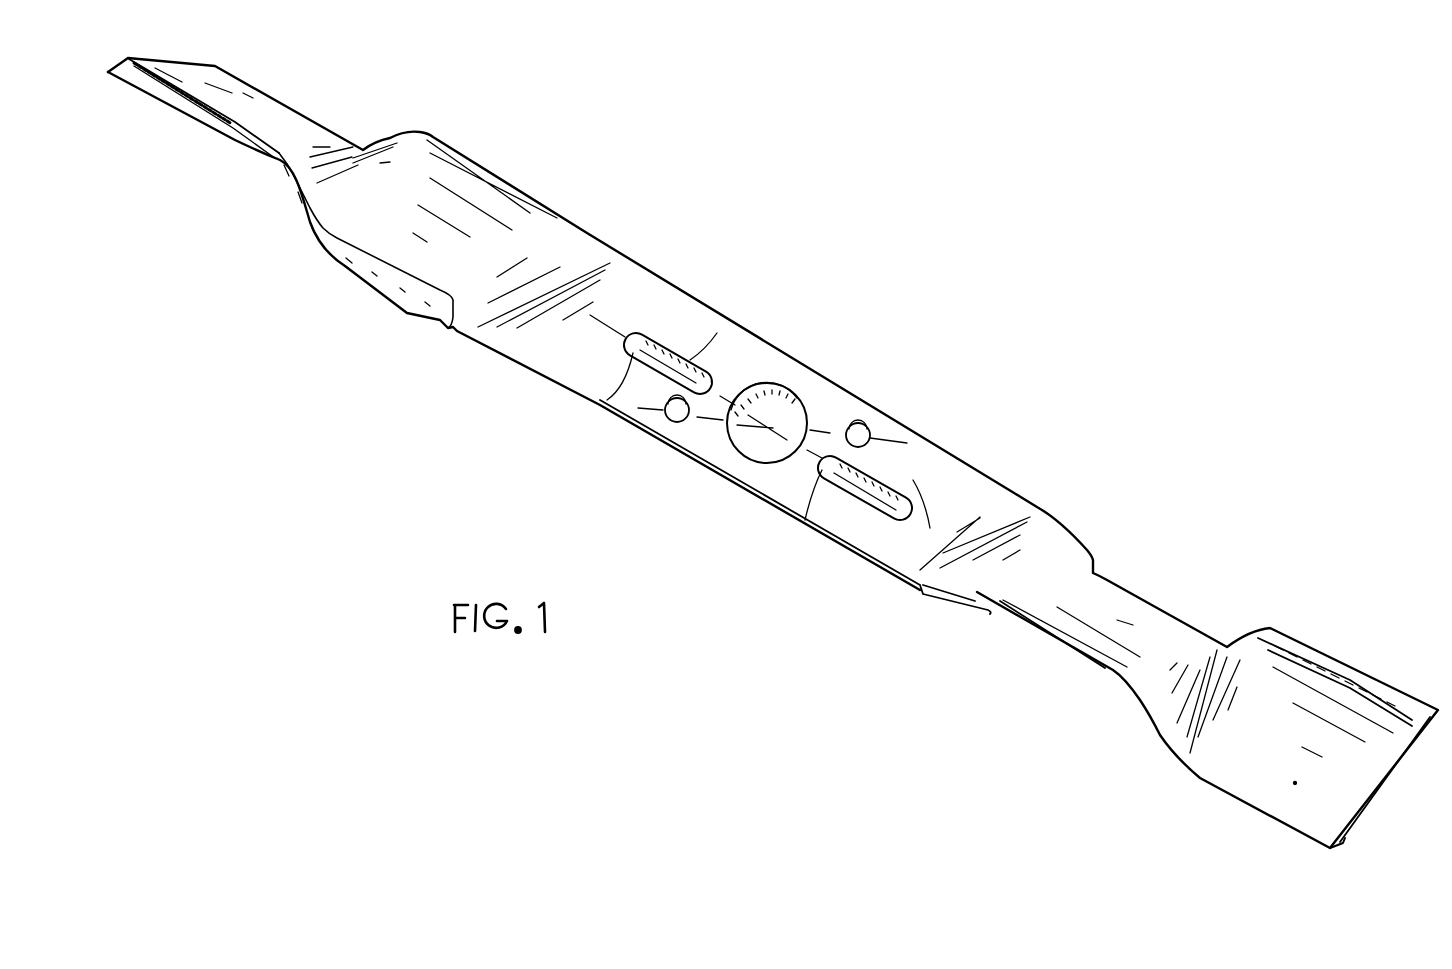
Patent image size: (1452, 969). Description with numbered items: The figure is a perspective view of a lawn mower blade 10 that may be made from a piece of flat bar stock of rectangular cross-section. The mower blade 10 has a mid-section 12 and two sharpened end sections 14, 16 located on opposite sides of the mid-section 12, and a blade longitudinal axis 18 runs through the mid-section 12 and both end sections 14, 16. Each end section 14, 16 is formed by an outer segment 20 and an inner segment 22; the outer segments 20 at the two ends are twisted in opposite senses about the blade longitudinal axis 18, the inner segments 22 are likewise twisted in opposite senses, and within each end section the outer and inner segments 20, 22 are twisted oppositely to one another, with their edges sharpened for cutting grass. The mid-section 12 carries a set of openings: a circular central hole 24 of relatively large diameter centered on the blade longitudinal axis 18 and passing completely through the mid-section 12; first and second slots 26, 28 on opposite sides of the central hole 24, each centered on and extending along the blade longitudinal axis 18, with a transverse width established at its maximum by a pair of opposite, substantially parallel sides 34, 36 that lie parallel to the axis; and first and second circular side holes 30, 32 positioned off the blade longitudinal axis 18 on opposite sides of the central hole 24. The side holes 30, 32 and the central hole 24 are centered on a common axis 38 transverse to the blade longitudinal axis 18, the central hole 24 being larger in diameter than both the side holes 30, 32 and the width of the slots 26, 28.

The lawn mower blade 10 is at (814, 249).
The mid-section 12 is at (677, 307).
The end section 14 is at (440, 132).
The end section 16 is at (1285, 627).
The blade longitudinal axis 18 is at (947, 540).
The outer segment 20 is at (273, 122).
The inner segment 22 is at (498, 212).
The central hole 24 is at (793, 387).
The first slot 26 is at (687, 357).
The second slot 28 is at (900, 487).
The first side hole 30 is at (673, 430).
The second side hole 32 is at (862, 427).
The parallel side 34 is at (652, 332).
The parallel side 36 is at (607, 400).
The common axis 38 is at (712, 418).